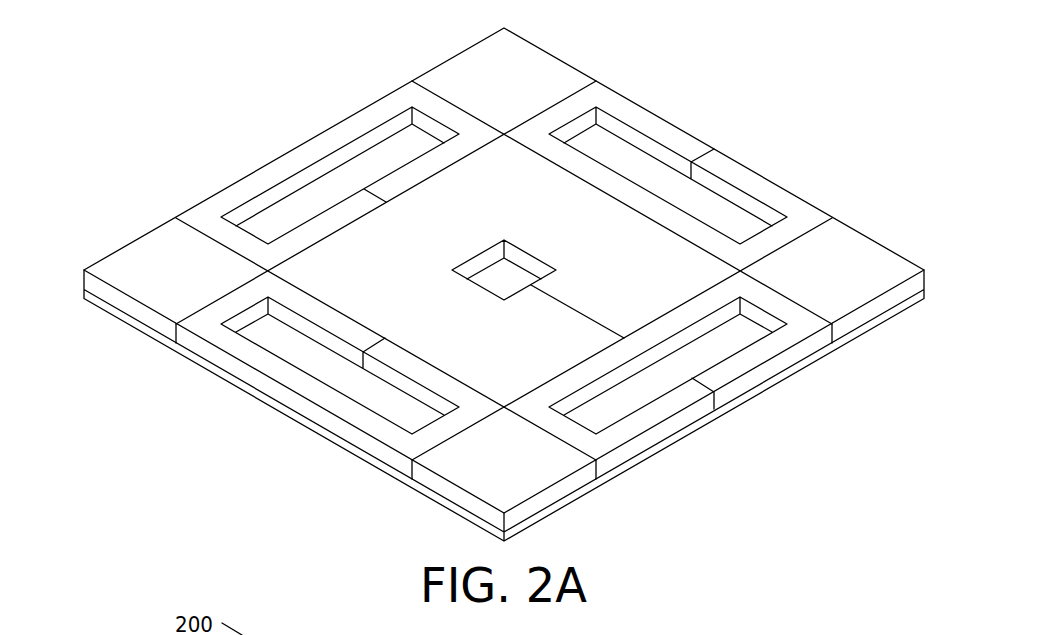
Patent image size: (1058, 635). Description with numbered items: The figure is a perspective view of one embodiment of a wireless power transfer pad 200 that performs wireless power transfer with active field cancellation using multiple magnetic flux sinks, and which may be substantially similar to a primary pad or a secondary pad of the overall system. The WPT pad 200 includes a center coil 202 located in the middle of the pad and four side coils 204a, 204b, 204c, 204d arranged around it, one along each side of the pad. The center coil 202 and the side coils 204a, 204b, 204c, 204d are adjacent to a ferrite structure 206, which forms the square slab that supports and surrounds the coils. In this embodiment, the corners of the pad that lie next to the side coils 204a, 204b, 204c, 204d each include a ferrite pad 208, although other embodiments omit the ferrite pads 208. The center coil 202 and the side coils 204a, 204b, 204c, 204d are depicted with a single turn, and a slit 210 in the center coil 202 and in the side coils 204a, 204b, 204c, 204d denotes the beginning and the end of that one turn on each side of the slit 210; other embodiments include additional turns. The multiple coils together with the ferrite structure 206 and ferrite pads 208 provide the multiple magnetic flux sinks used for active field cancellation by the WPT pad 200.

The wireless power transfer pad 200 is at (172, 39).
The center coil 202 is at (417, 274).
The side coil 204a is at (292, 392).
The side coil 204b is at (295, 147).
The side coil 204c is at (642, 102).
The side coil 204d is at (752, 372).
The ferrite structure 206 is at (342, 442).
The ferrite pad 208 is at (147, 237).
The slit 210 is at (572, 310).